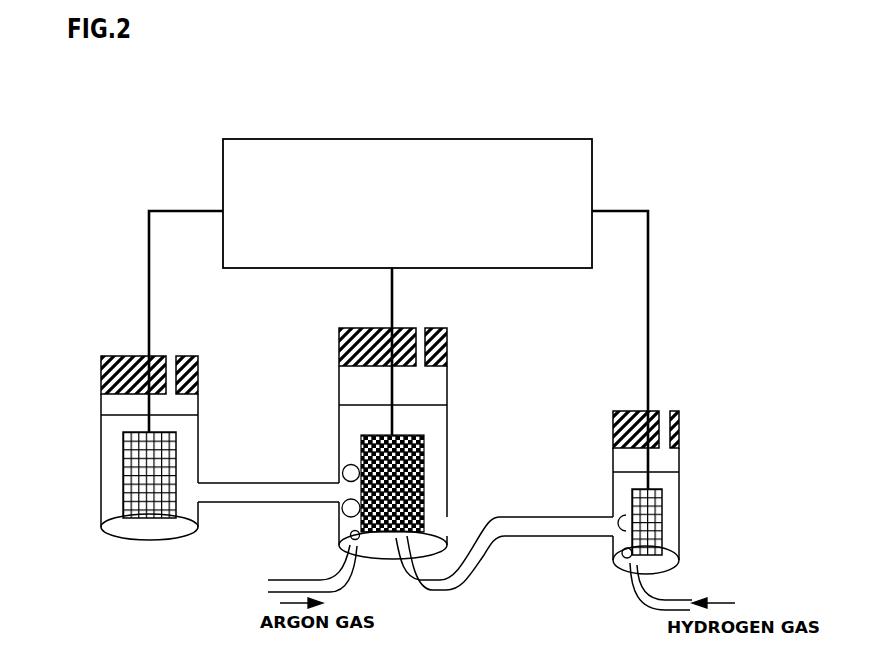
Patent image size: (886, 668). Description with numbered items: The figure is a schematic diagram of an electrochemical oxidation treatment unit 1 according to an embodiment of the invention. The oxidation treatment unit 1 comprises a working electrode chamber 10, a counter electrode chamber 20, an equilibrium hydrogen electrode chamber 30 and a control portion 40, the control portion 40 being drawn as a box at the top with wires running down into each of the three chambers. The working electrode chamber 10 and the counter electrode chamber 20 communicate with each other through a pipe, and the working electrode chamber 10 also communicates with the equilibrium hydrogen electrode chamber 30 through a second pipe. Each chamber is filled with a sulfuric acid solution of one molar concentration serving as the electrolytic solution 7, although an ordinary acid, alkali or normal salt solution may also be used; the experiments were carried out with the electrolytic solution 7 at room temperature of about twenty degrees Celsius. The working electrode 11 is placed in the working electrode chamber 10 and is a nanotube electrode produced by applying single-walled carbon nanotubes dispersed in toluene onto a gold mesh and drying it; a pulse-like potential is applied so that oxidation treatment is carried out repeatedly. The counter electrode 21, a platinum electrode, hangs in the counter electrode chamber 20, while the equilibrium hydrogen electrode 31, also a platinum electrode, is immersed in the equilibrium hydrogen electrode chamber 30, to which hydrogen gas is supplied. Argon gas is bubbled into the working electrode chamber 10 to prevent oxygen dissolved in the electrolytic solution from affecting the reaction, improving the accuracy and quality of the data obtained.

The electrochemical oxidation treatment unit 1 is at (706, 239).
The electrolytic solution 7 is at (113, 458).
The working electrode chamber 10 is at (469, 343).
The working electrode 11 is at (412, 457).
The counter electrode chamber 20 is at (222, 370).
The counter electrode 21 is at (126, 513).
The equilibrium hydrogen electrode chamber 30 is at (696, 438).
The equilibrium hydrogen electrode 31 is at (657, 512).
The control portion 40 is at (557, 162).